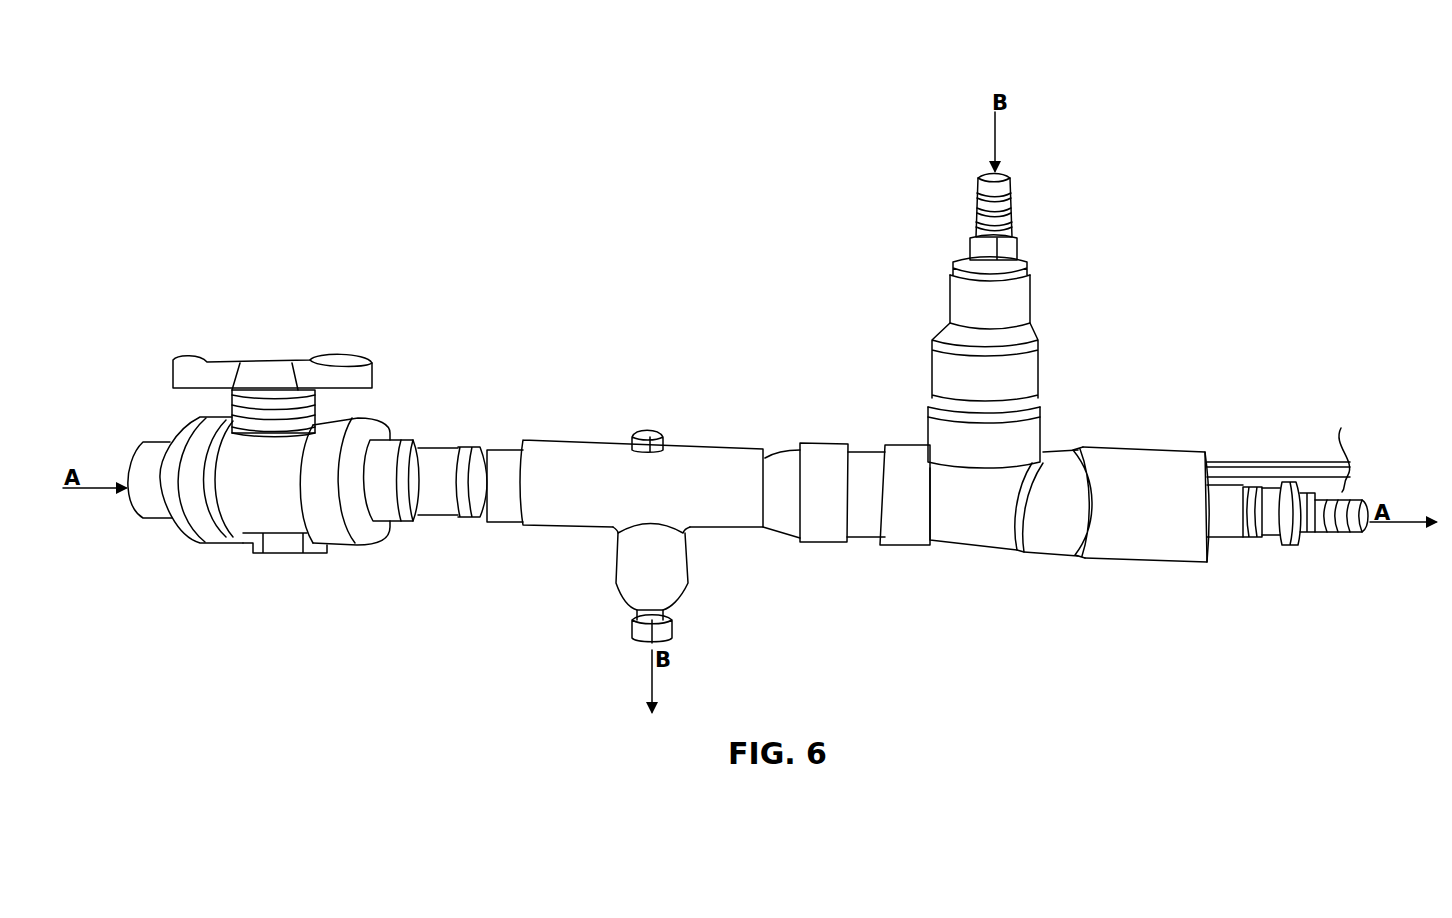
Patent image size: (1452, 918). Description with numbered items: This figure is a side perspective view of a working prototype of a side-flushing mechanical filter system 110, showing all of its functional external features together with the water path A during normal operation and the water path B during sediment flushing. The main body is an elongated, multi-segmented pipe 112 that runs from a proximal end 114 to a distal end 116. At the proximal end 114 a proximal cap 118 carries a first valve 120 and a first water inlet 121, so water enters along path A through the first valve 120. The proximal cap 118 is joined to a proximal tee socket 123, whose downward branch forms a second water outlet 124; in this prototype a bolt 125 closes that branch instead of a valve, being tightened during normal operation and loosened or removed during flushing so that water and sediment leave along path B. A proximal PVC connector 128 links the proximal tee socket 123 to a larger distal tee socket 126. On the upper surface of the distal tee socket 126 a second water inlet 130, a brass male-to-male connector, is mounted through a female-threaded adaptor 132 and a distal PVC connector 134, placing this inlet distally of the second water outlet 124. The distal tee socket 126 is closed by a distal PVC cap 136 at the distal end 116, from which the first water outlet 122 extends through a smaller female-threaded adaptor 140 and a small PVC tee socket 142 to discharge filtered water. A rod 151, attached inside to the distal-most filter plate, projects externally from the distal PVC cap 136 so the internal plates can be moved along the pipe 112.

The side-flushing mechanical filter system 110 is at (787, 126).
The pipe 112 is at (737, 346).
The proximal end 114 is at (186, 568).
The distal end 116 is at (1192, 359).
The proximal cap 118 is at (371, 419).
The first valve 120 is at (298, 358).
The first water inlet 121 is at (128, 462).
The first water outlet 122 is at (1340, 533).
The proximal tee socket 123 is at (540, 439).
The second water outlet 124 is at (614, 593).
The bolt 125 is at (632, 622).
The distal tee socket 126 is at (1047, 456).
The proximal PVC connector 128 is at (780, 454).
The second water inlet 130 is at (1003, 171).
The female-threaded adaptor 132 is at (1020, 252).
The distal PVC connector 134 is at (1033, 312).
The distal PVC cap 136 is at (1140, 447).
The female-threaded adaptor 140 is at (1280, 541).
The PVC tee socket 142 is at (1232, 536).
The rod 151 is at (1260, 462).